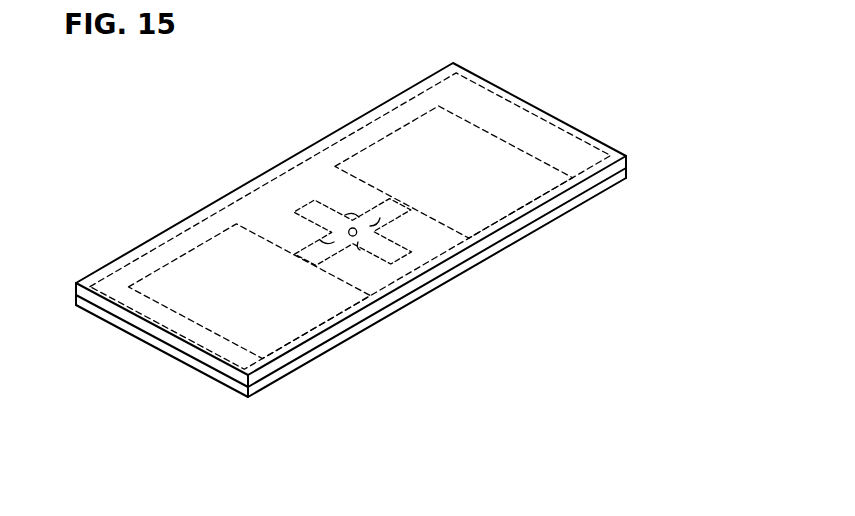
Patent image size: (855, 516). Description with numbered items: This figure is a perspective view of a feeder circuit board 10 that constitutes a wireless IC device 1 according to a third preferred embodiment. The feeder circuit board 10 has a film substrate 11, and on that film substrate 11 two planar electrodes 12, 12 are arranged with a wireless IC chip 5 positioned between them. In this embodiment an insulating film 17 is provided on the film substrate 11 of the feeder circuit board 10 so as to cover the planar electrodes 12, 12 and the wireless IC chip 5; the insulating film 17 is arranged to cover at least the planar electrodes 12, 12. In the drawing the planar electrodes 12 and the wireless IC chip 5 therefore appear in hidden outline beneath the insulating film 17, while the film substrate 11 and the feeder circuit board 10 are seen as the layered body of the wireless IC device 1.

The wireless IC device / antenna module 1 is at (299, 153).
The wireless IC chip 5 is at (336, 222).
The feeder circuit board 10 is at (317, 358).
The film substrate 11 is at (415, 303).
The planar electrodes 12 is at (193, 260).
The insulating film 17 is at (437, 256).